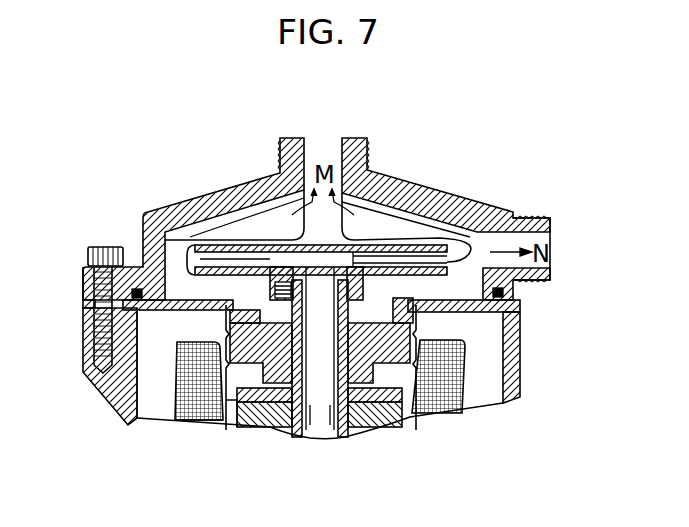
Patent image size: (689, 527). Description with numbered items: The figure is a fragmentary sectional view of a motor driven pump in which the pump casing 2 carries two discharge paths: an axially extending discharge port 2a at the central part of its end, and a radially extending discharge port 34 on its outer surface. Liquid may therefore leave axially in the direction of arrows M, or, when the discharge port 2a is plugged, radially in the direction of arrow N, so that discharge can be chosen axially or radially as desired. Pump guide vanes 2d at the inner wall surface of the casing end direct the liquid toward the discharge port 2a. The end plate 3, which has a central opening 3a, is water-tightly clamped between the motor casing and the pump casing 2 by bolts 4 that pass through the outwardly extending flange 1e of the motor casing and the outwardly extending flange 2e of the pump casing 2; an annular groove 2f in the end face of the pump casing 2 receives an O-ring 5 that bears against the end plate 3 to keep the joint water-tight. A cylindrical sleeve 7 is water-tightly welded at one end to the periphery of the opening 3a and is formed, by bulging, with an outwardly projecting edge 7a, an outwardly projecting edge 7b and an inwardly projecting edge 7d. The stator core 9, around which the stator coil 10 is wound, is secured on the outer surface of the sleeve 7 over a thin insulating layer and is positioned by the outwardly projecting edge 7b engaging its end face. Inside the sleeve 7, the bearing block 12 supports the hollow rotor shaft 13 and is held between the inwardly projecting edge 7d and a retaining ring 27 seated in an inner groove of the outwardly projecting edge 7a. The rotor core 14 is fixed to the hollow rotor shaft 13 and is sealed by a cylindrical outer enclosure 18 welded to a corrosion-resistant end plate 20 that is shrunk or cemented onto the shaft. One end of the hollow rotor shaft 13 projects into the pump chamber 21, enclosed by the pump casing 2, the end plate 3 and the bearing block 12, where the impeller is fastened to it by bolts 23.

The pump casing 2 is at (214, 204).
The discharge port 2a is at (321, 150).
The pump guide vanes 2d is at (398, 224).
The outwardly extending flange 2e is at (84, 276).
The annular groove 2f is at (484, 282).
The radially extending discharge port 34 is at (550, 266).
The bolts 4 is at (102, 247).
The pump chamber 21 is at (165, 268).
The bolts 23 is at (278, 288).
The retaining ring 27 is at (242, 316).
The end plate 3 is at (172, 318).
The opening 3a is at (222, 300).
The outwardly extending flange 1e is at (84, 344).
The O-ring 5 is at (502, 312).
The cylindrical sleeve 7 is at (222, 392).
The outwardly projecting edge 7a is at (226, 320).
The outwardly projecting edge 7b is at (216, 418).
The inwardly projecting edge 7d is at (220, 360).
The stator core 9 is at (200, 425).
The stator coil 10 is at (178, 398).
The bearing block 12 is at (299, 358).
The hollow rotor shaft 13 is at (312, 412).
The rotor core 14 is at (270, 428).
The cylindrical outer enclosure 18 is at (240, 432).
The end plate 20 is at (300, 390).